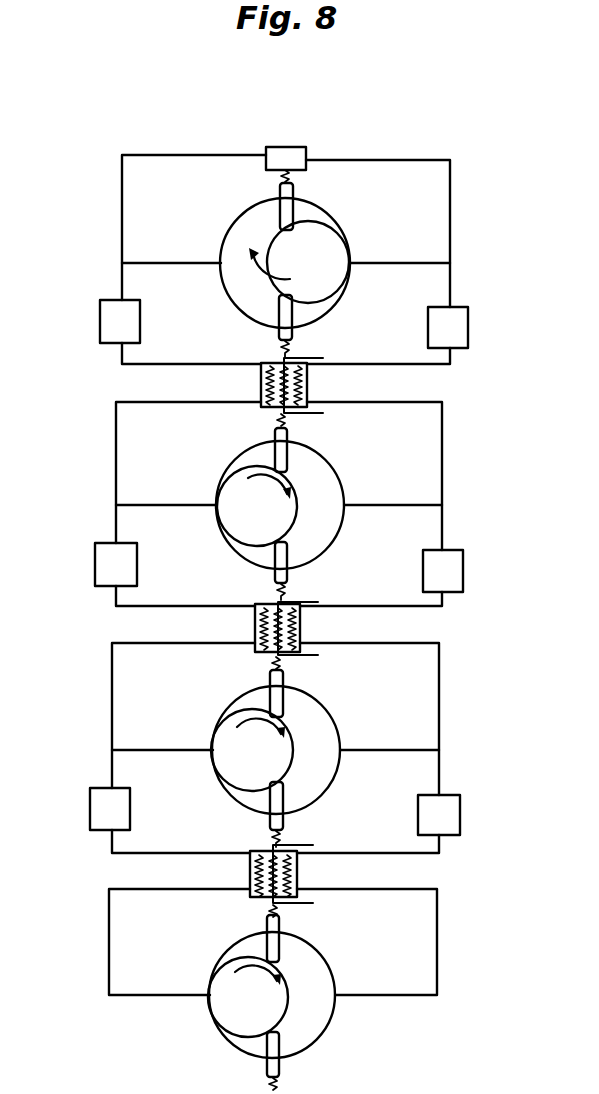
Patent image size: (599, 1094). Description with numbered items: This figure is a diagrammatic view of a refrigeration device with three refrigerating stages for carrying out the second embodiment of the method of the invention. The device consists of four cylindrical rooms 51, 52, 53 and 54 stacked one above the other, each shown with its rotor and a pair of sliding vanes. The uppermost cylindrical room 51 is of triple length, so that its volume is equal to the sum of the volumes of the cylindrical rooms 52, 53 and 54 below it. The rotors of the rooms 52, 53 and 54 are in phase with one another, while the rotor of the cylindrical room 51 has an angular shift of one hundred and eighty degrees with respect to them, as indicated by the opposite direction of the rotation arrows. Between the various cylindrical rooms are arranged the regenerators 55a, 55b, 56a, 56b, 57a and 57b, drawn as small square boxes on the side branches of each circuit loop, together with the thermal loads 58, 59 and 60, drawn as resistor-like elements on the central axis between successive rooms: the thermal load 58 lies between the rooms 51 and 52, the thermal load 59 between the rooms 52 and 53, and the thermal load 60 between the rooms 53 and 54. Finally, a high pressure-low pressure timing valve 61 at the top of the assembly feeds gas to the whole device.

The cylindrical room 51 is at (334, 222).
The cylindrical room 52 is at (335, 472).
The cylindrical room 53 is at (330, 715).
The cylindrical room 54 is at (320, 955).
The regenerator 55a is at (113, 330).
The regenerator 55b is at (455, 328).
The regenerator 56a is at (103, 560).
The regenerator 56b is at (446, 562).
The regenerator 57a is at (110, 802).
The regenerator 57b is at (443, 807).
The thermal load 58 is at (300, 392).
The thermal load 59 is at (295, 628).
The thermal load 60 is at (292, 878).
The high pressure-low pressure timing valve 61 is at (305, 153).